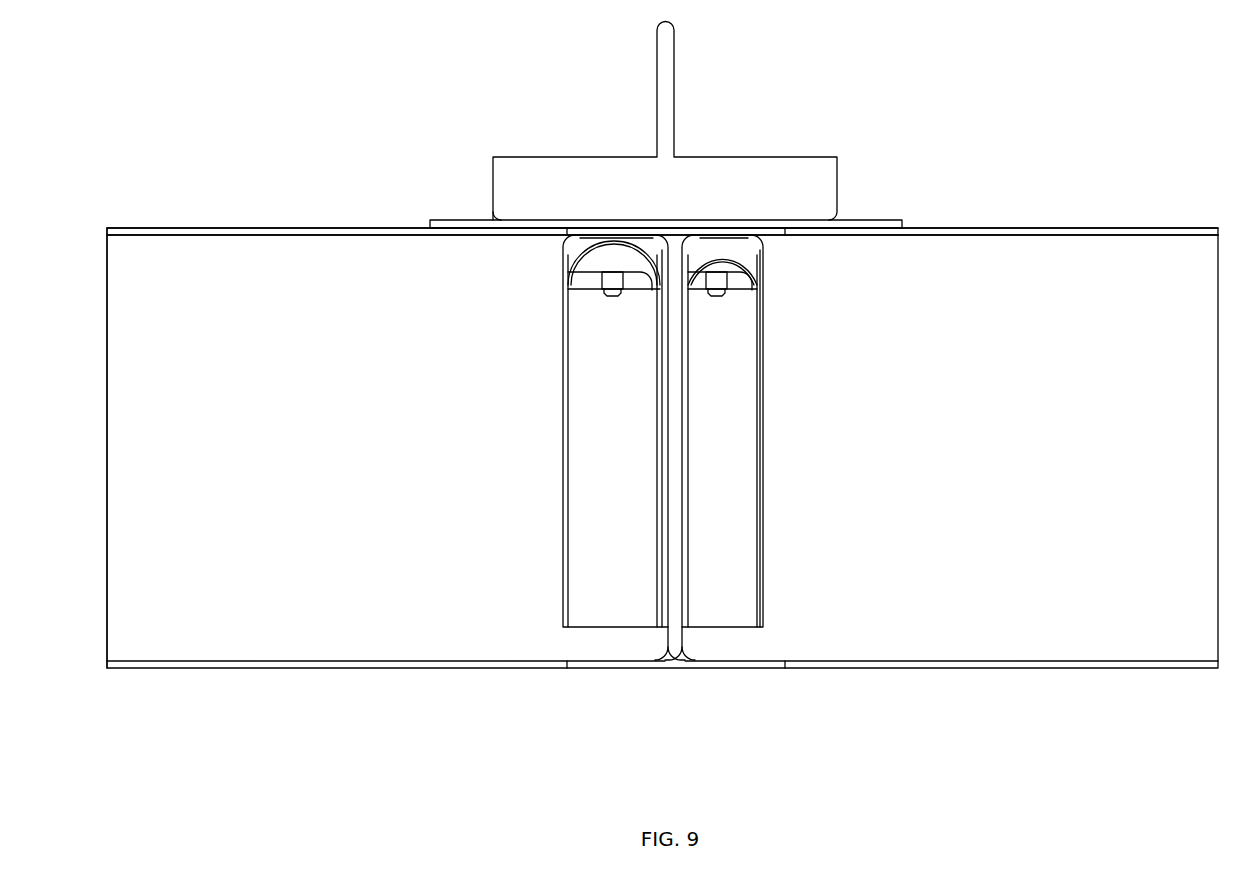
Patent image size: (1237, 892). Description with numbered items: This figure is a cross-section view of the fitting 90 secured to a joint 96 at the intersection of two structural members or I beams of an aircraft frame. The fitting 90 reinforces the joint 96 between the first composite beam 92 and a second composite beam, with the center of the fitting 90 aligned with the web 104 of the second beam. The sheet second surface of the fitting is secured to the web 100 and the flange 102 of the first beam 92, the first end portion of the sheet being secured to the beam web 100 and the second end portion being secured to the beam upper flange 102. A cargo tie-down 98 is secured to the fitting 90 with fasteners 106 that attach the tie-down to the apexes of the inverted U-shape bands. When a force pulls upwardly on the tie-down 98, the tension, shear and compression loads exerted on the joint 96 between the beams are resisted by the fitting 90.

The fitting 90 is at (763, 407).
The first composite beam 92 is at (106, 281).
The joint 96 is at (635, 668).
The cargo tie-down 98 is at (837, 175).
The web 100 is at (107, 588).
The flange 102 is at (215, 228).
The web 104 is at (677, 598).
The fasteners 106 is at (617, 281).